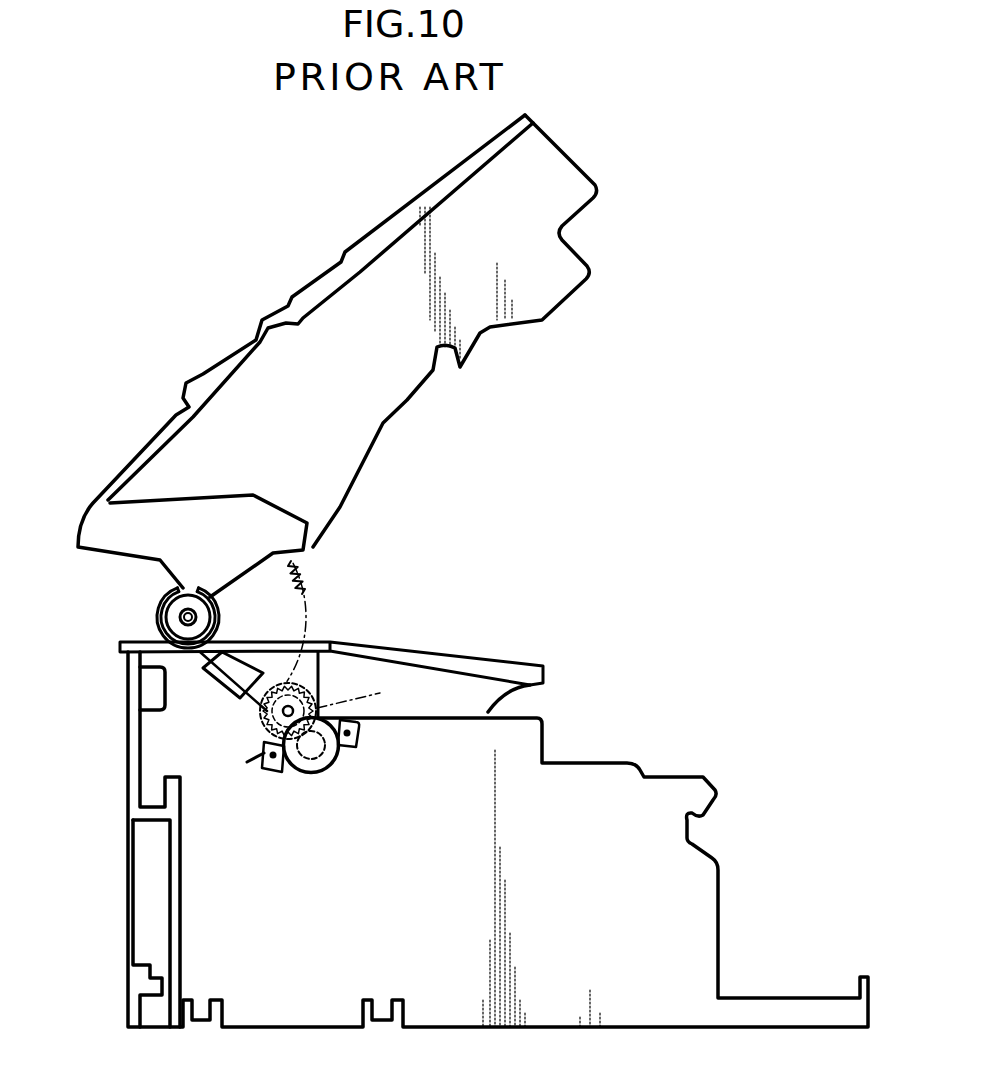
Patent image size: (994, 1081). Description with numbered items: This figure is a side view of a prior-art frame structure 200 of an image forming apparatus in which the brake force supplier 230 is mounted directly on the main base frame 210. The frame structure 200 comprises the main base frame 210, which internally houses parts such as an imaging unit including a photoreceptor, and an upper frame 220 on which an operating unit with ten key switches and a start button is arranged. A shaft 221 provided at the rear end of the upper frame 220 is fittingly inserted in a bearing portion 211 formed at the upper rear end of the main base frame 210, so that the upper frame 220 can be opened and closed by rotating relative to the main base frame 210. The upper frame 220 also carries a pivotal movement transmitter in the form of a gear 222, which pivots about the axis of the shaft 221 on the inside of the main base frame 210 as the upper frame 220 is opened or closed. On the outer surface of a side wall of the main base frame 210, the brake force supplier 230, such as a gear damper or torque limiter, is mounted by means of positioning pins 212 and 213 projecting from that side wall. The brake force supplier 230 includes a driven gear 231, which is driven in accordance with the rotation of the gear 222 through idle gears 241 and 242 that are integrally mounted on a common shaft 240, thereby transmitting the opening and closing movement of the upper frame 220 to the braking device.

The frame structure 200 is at (440, 470).
The upper frame 220 is at (393, 411).
The main base frame 210 is at (343, 647).
The bearing portion 211 is at (150, 633).
The shaft 221 is at (183, 613).
The pivotal movement transmitter (gear) 222 is at (302, 572).
The common shaft 240 is at (283, 713).
The idle gear 241 is at (322, 674).
The idle gear 242 is at (380, 693).
The brake force supplier 230 is at (305, 770).
The driven gear 231 is at (322, 747).
The positioning pin 213 is at (360, 737).
The positioning pin 212 is at (275, 770).